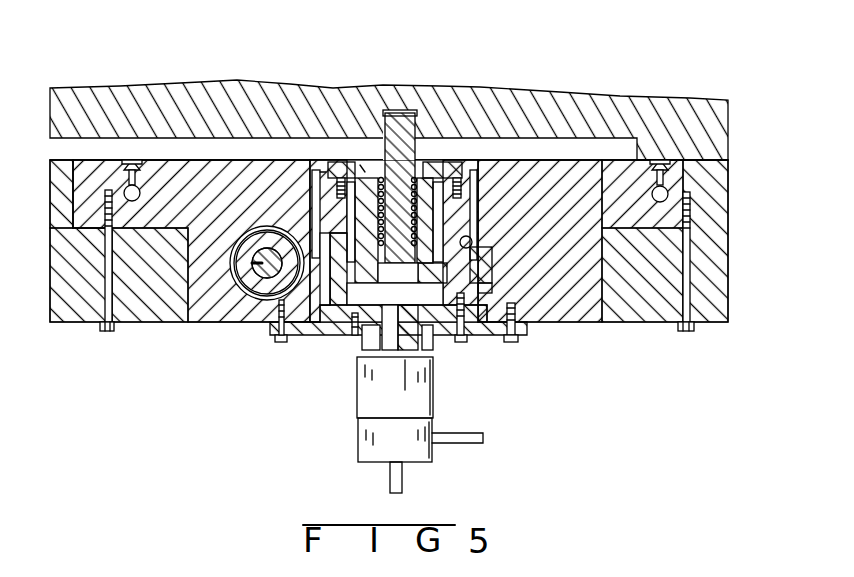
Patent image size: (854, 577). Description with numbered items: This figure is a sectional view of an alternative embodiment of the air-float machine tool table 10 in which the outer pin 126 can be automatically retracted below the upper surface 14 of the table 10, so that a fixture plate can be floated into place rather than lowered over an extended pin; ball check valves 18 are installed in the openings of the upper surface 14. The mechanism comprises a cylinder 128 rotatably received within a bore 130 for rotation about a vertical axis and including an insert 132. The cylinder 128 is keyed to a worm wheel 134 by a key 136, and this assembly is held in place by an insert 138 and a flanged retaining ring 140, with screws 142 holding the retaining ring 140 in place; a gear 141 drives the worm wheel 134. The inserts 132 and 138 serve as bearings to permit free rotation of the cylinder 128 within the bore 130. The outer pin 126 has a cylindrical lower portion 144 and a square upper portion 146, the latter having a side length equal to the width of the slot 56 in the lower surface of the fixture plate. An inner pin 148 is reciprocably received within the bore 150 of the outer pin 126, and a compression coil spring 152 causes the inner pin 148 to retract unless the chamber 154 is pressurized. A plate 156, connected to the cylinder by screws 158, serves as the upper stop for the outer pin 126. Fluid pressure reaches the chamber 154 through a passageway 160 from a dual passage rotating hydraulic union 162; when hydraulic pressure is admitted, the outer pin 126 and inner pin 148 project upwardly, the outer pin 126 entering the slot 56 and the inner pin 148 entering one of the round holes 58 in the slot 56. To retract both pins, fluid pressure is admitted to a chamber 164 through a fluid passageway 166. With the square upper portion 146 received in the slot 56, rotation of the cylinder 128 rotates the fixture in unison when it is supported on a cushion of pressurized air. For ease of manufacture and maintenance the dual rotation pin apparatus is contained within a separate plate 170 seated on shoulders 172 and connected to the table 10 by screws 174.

The air-float machine tool table 10 is at (655, 322).
The upper surface 14 is at (578, 160).
The ball check valves 18 is at (129, 158).
The slot 56 is at (230, 150).
The holes 58 is at (405, 113).
The outer pin 126 is at (345, 165).
The cylinder 128 is at (465, 232).
The bore 130 is at (325, 228).
The insert 132 is at (478, 168).
The worm wheel 134 is at (492, 265).
The key 136 is at (490, 245).
The insert 138 is at (498, 292).
The flanged retaining ring 140 is at (500, 336).
The gear 141 is at (253, 238).
The screws 142 is at (268, 330).
The cylindrical lower portion 144 is at (452, 165).
The square upper portion 146 is at (420, 165).
The inner pin 148 is at (398, 113).
The bore 150 is at (353, 312).
The compression coil spring 152 is at (362, 168).
The chamber 154 is at (433, 332).
The plate 156 is at (322, 172).
The screws 158 is at (335, 162).
The passageway 160 is at (397, 345).
The dual passage rotating hydraulic union 162 is at (375, 397).
The chamber 164 is at (470, 200).
The fluid passageway 166 is at (332, 318).
The separate plate 170 is at (182, 240).
The shoulders 172 is at (88, 228).
The screws 174 is at (112, 326).